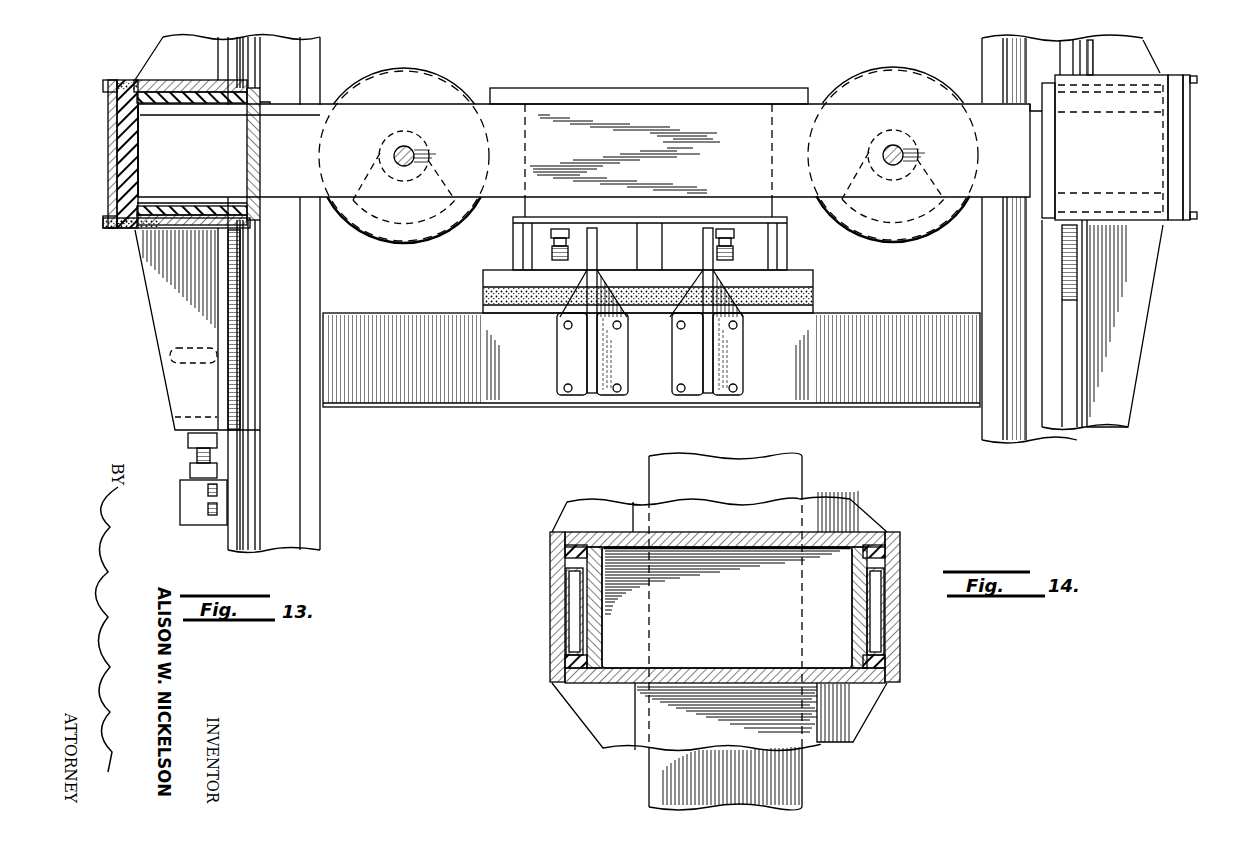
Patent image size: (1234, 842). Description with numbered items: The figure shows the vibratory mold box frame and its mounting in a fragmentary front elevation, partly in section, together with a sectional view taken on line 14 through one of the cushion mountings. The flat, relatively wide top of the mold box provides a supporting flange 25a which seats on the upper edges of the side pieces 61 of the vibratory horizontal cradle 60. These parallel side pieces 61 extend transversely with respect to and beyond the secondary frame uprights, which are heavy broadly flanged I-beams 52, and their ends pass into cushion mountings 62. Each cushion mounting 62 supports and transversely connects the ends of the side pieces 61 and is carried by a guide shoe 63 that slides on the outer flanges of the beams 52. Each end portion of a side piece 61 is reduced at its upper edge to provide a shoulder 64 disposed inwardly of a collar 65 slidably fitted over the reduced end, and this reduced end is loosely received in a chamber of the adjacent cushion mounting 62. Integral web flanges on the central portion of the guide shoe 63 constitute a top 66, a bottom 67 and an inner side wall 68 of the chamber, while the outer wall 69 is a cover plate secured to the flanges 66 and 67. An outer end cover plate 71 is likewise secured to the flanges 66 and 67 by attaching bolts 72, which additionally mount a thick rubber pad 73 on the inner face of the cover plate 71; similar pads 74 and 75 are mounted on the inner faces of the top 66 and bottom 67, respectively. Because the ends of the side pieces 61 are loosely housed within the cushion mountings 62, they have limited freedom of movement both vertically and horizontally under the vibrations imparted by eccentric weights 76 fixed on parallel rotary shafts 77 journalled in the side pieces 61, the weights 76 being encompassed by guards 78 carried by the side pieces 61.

In FIG. 13, the section line 14- 14 is at (145, 45).
In FIG. 13, the supporting flange 25a is at (722, 84).
In FIG. 14, the I-beam 52 is at (663, 775).
In FIG. 13, the vibratory horizontal cradle 60 is at (819, 101).
In FIG. 13, the side piece 61 is at (574, 150).
In FIG. 14, the side piece 61 is at (551, 623).
In FIG. 13, the cushion mounting 62 is at (648, 142).
In FIG. 13, the guide shoe 63 is at (170, 317).
In FIG. 14, the guide shoe 63 is at (840, 738).
In FIG. 13, the shoulder 64 is at (275, 108).
In FIG. 13, the collar 65 is at (262, 100).
In FIG. 13, the top 66 is at (186, 82).
In FIG. 14, the top 66 is at (690, 532).
In FIG. 13, the bottom 67 is at (165, 228).
In FIG. 14, the bottom 67 is at (688, 685).
In FIG. 14, the inner side wall 68 is at (600, 630).
In FIG. 14, the outer wall 69 is at (550, 581).
In FIG. 13, the outer end cover plate 71 is at (108, 150).
In FIG. 13, the attaching bolt 72 is at (105, 83).
In FIG. 13, the rubber pad 73 is at (138, 143).
In FIG. 13, the pad 74 is at (232, 105).
In FIG. 14, the pad 74 is at (552, 538).
In FIG. 13, the pad 75 is at (176, 207).
In FIG. 14, the pad 75 is at (560, 668).
In FIG. 13, the eccentric weight 76 is at (405, 213).
In FIG. 13, the rotary shaft 77 is at (407, 147).
In FIG. 13, the guard 78 is at (437, 78).